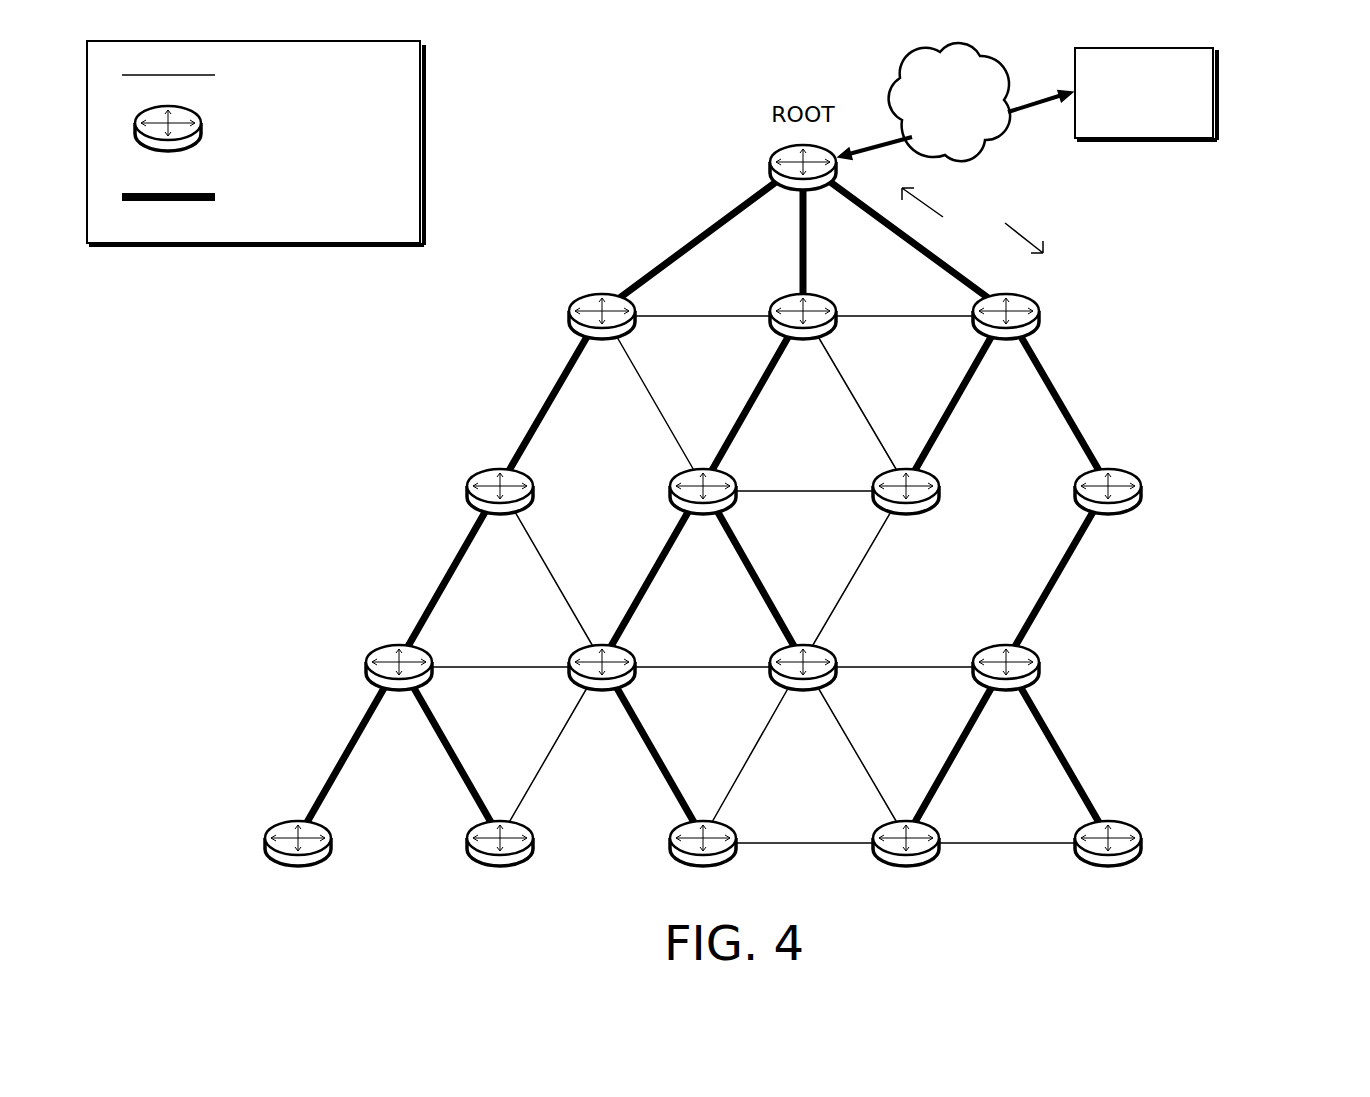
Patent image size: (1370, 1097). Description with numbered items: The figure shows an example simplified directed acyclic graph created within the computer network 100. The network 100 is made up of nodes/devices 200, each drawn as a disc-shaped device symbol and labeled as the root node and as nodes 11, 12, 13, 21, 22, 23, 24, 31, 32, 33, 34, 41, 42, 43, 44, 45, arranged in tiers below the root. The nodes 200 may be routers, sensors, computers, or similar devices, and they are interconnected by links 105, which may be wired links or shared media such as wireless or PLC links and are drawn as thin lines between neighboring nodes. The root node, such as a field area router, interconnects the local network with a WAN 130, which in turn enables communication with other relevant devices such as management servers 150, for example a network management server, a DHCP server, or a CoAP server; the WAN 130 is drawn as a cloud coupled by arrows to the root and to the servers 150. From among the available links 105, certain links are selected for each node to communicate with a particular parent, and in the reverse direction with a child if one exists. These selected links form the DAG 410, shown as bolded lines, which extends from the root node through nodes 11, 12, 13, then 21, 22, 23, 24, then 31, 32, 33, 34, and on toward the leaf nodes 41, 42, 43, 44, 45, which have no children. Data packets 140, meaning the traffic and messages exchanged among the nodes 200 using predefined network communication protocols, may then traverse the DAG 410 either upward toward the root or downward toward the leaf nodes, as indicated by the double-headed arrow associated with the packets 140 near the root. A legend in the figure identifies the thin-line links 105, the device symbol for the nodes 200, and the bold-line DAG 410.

The computer network 100 is at (1285, 105).
The links 105 is at (241, 75).
The nodes/devices 200 is at (257, 128).
The DAG 410 is at (233, 197).
The WAN 130 is at (932, 129).
The servers 150 is at (1125, 122).
The data packets 140 is at (956, 236).
The node 11 is at (602, 337).
The node 12 is at (803, 337).
The node 13 is at (1006, 337).
The node 21 is at (500, 512).
The node 22 is at (703, 512).
The node 23 is at (906, 512).
The node 24 is at (1108, 512).
The node 31 is at (399, 688).
The node 32 is at (602, 688).
The node 33 is at (803, 688).
The node 34 is at (1006, 688).
The node 41 is at (298, 864).
The node 42 is at (500, 864).
The node 43 is at (703, 864).
The node 44 is at (906, 864).
The node 45 is at (1108, 864).